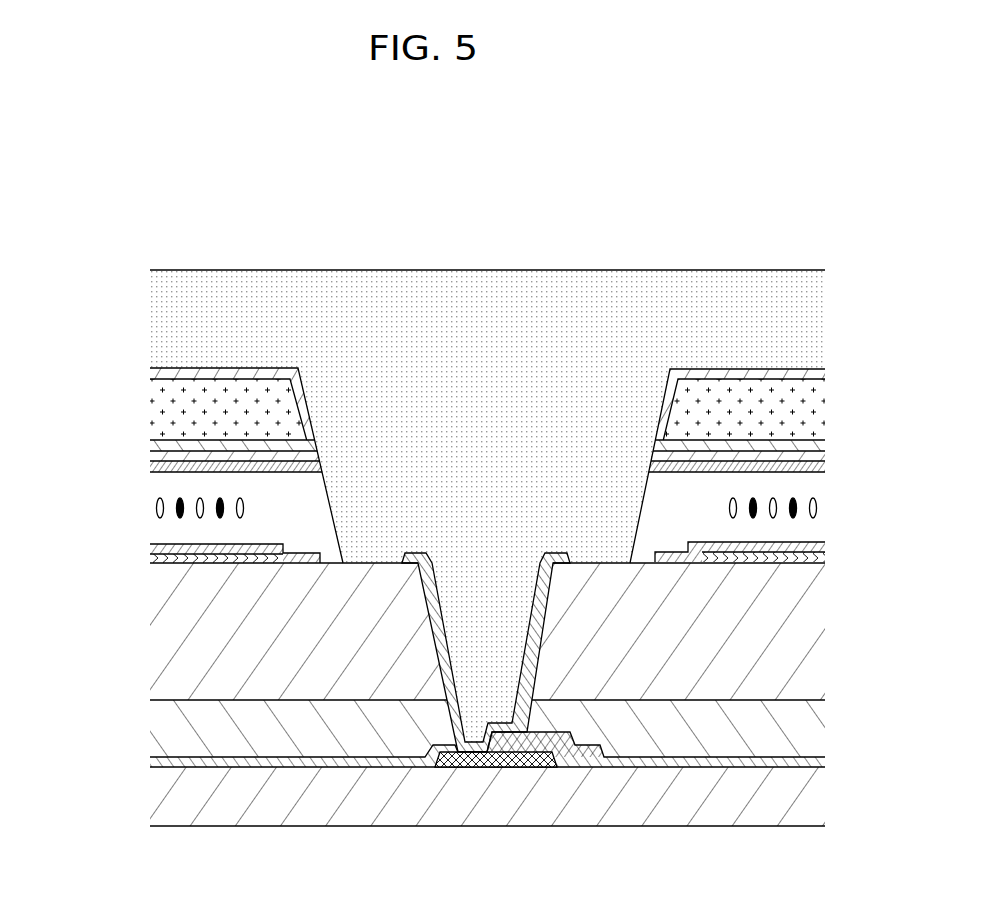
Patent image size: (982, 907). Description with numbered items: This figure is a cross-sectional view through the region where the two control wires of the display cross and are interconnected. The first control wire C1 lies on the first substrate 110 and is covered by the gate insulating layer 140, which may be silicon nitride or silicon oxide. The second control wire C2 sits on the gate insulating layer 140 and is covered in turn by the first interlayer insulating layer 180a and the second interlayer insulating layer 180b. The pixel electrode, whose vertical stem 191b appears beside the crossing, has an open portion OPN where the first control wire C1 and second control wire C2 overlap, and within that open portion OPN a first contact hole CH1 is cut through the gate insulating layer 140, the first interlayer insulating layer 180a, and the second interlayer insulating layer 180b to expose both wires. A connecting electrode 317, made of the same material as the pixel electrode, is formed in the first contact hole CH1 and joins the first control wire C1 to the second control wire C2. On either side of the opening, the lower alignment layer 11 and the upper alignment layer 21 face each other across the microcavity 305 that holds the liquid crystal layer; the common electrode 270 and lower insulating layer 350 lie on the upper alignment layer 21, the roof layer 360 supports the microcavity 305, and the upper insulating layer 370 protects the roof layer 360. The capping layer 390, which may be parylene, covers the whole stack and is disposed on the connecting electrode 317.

The capping layer 390 is at (170, 308).
The upper insulating layer 370 is at (148, 372).
The roof layer 360 is at (167, 400).
The lower insulating layer 350 is at (150, 447).
The common electrode 270 is at (150, 454).
The upper alignment layer 21 is at (147, 467).
The microcavity 305 is at (158, 522).
The lower alignment layer 11 is at (148, 545).
The vertical stem 191b is at (147, 562).
The second interlayer insulating layer 180b is at (168, 630).
The first interlayer insulating layer 180a is at (168, 723).
The gate insulating layer 140 is at (155, 762).
The first substrate 110 is at (168, 795).
The connecting electrode 317 is at (557, 553).
The first control wire C1 is at (498, 760).
The second control wire C2 is at (573, 760).
The first contact hole CH1 is at (433, 597).
The open portion OPN is at (477, 404).